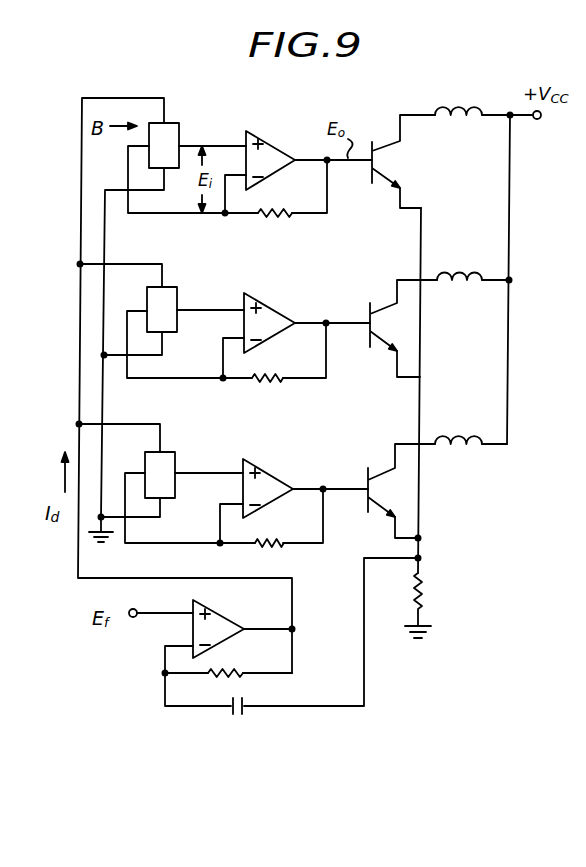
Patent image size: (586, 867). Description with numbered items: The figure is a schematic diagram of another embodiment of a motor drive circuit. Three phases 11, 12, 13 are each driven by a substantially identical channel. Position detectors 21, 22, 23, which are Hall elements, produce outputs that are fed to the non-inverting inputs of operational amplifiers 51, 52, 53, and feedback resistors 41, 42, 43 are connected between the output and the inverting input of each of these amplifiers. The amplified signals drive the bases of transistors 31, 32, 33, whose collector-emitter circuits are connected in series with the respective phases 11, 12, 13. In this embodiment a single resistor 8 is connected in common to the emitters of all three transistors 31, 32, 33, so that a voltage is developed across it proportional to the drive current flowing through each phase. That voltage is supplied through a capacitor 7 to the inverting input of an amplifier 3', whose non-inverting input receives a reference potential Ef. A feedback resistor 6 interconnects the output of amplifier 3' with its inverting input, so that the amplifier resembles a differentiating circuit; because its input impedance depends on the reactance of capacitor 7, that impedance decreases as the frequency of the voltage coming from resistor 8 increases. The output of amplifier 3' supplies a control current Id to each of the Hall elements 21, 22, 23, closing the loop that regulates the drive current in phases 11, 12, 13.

The position detector 21 is at (169, 158).
The position detector 22 is at (172, 327).
The position detector 23 is at (175, 488).
The amplifier 51 is at (273, 172).
The amplifier 52 is at (282, 335).
The amplifier 53 is at (279, 503).
The feedback resistor 41 is at (274, 215).
The feedback resistor 42 is at (274, 383).
The feedback resistor 43 is at (280, 548).
The transistor 31 is at (372, 172).
The transistor 32 is at (370, 341).
The transistor 33 is at (368, 499).
The phase 11 is at (465, 120).
The phase 12 is at (463, 284).
The phase 13 is at (461, 447).
The amplifier 3' is at (226, 626).
The feedback resistor 6 is at (240, 676).
The capacitor 7 is at (236, 716).
The resistor 8 is at (430, 593).